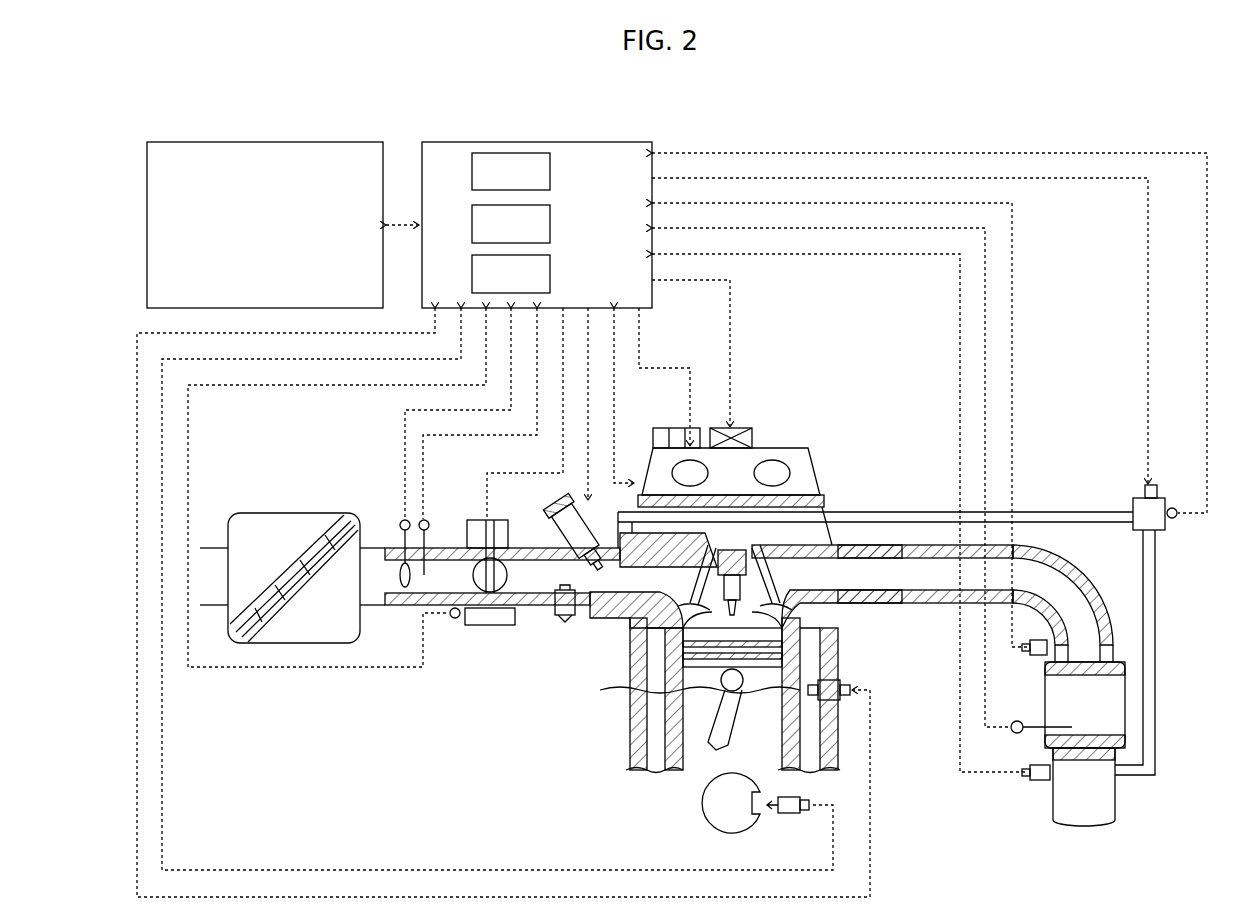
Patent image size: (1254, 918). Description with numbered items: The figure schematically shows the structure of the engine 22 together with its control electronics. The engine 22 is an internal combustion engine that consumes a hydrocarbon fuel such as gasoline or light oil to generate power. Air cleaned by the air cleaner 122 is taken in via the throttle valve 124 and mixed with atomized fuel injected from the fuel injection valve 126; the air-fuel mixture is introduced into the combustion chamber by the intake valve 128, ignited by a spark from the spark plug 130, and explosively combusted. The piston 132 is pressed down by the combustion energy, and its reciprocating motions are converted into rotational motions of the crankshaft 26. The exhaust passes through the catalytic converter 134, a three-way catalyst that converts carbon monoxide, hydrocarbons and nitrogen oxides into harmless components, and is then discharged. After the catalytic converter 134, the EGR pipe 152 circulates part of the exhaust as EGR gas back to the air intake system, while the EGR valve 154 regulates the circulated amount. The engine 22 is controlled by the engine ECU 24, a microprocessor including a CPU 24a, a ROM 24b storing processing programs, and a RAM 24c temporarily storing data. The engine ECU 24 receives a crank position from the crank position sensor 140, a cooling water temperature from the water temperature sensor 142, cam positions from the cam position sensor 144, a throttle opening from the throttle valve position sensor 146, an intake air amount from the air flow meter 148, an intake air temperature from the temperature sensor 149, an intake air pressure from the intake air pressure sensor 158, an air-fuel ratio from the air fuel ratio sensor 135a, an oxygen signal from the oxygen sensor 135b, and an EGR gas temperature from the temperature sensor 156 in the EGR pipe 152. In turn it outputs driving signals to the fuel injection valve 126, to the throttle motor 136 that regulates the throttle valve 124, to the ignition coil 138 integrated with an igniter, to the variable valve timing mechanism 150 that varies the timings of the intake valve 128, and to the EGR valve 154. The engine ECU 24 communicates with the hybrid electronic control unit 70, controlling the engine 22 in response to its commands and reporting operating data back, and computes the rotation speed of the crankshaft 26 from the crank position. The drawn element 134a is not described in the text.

The hybrid electronic control unit 70 is at (263, 140).
The engine electronic control unit 24 is at (535, 140).
The CPU 24a is at (552, 172).
The ROM 24b is at (552, 224).
The RAM 24c is at (552, 274).
The engine 22 is at (834, 369).
The air cleaner 122 is at (298, 511).
The throttle valve 124 is at (512, 560).
The fuel injection valve 126 is at (563, 553).
The intake valve 128 is at (703, 606).
The spark plug 130 is at (772, 580).
The piston 132 is at (660, 688).
The catalytic converter 134 is at (1048, 688).
The catalyst temperature sensor 134a is at (1015, 724).
The air fuel ratio sensor 135a is at (1035, 643).
The oxygen sensor 135b is at (1045, 781).
The throttle motor 136 is at (473, 519).
The ignition coil 138 is at (753, 440).
The crank position sensor 140 is at (778, 815).
The water temperature sensor 142 is at (838, 680).
The cam position sensor 144 is at (636, 482).
The throttle valve position sensor 146 is at (494, 627).
The air flow meter 148 is at (400, 522).
The temperature sensor 149 is at (429, 522).
The variable valve timing mechanism 150 is at (822, 491).
The EGR pipe 152 is at (1160, 633).
The EGR valve 154 is at (1142, 490).
The temperature sensor 156 is at (1167, 531).
The intake air pressure sensor 158 is at (573, 623).
The crankshaft 26 is at (702, 803).